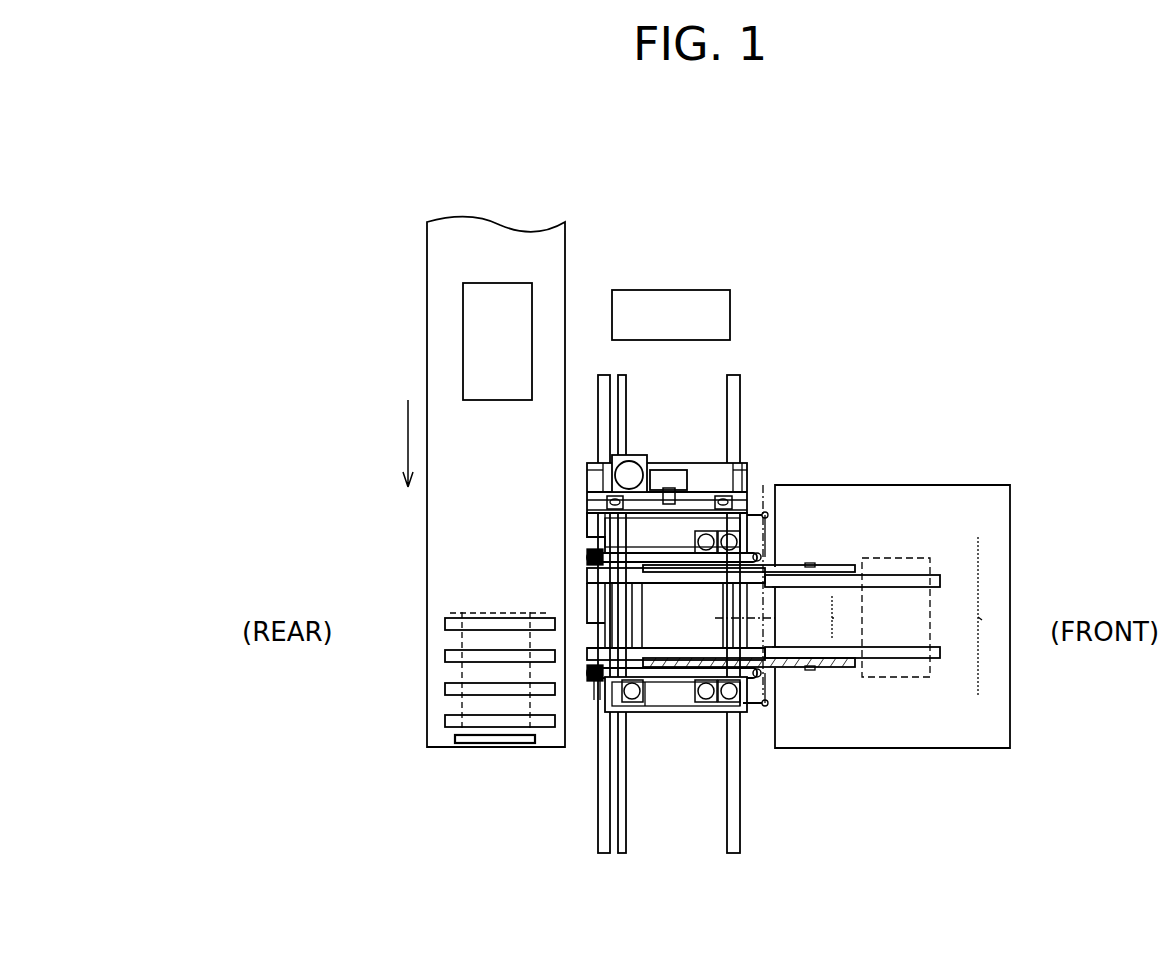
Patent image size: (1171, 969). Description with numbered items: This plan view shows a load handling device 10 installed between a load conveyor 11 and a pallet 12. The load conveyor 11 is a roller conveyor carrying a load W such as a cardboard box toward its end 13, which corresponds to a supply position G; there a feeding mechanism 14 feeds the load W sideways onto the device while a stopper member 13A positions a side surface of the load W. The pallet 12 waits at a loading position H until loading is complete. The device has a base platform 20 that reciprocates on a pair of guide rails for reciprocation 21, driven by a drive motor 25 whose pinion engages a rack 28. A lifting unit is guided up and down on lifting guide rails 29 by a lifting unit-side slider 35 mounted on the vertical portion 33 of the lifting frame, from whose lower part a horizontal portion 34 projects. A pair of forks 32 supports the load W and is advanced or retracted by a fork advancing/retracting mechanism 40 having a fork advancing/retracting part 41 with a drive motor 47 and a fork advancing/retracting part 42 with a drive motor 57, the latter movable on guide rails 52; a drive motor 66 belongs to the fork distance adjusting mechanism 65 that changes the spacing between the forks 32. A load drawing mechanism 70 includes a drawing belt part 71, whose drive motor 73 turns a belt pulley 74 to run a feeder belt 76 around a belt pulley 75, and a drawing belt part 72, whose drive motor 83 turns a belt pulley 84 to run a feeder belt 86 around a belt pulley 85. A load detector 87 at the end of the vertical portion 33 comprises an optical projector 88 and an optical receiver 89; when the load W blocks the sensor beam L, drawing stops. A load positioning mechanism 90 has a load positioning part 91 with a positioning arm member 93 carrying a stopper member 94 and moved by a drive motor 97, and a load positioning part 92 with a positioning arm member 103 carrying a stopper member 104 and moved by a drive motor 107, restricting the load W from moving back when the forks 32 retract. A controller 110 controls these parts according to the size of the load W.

The load handling device 10 is at (788, 222).
The load conveyor 11 is at (427, 274).
The load W is at (462, 332).
The pallet 12 is at (905, 750).
The loading position H is at (948, 730).
The end 13 is at (430, 705).
The stopper member 13A is at (497, 746).
The feeding mechanism 14 is at (447, 618).
The supply position G is at (442, 672).
The controller 110 is at (670, 290).
The base platform 20 is at (705, 462).
The guide rails for reciprocation 21 is at (600, 830).
The rack 28 is at (627, 830).
The drive motor 25 is at (632, 455).
The lifting guide rails 29 is at (600, 473).
The vertical portion 33 is at (685, 488).
The lifting unit-side slider 35 is at (716, 495).
The horizontal portion 34 is at (676, 714).
The drive motor 57 is at (697, 544).
The load drawing mechanism 70 is at (545, 490).
The drawing belt part 71 is at (598, 665).
The drawing belt part 72 is at (592, 522).
The drive motor for driving a feeder belt 83 is at (590, 558).
The belt pulley 84 is at (588, 566).
The feeder belt 86 is at (604, 585).
The guide rails 52 is at (700, 603).
The sensor beam L is at (738, 620).
The drive motor 66 is at (632, 705).
The feeder belt 76 is at (705, 700).
The drive motor 47 is at (714, 704).
The fork distance adjusting mechanism 65 is at (650, 713).
The drive motor 97 is at (740, 706).
The optical receiver 89 is at (765, 708).
The drive motor 107 is at (765, 512).
The load detector 87 is at (768, 498).
The optical projector 88 is at (768, 522).
The drive motor for driving a feeder belt 73 is at (590, 676).
The belt pulley 74 is at (598, 682).
The belt pulley 75 is at (782, 712).
The positioning arm member 93 is at (792, 668).
The belt pulley 85 is at (776, 566).
The positioning arm member 103 is at (800, 565).
The stopper member 104 is at (813, 568).
The stopper member 94 is at (800, 665).
The forks 32 is at (888, 590).
The fork advancing/retracting part 42 is at (775, 590).
The fork advancing/retracting part 41 is at (773, 646).
The fork advancing/retracting mechanism 40 is at (846, 618).
The load positioning mechanism 90 is at (992, 617).
The load positioning part 91 is at (798, 668).
The load positioning part 92 is at (798, 566).